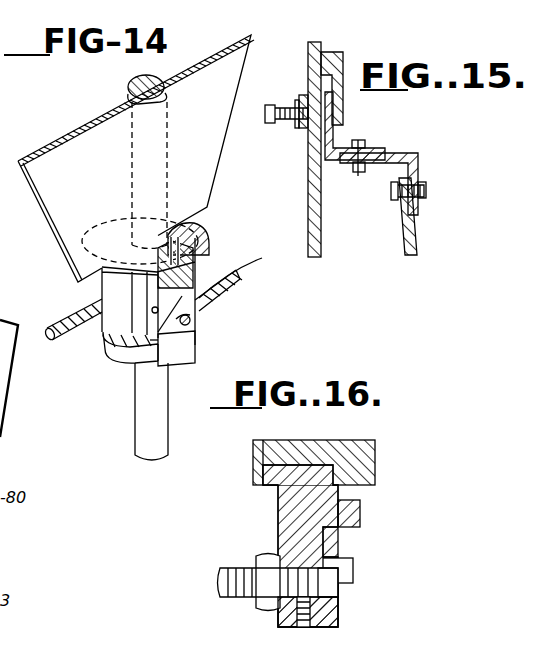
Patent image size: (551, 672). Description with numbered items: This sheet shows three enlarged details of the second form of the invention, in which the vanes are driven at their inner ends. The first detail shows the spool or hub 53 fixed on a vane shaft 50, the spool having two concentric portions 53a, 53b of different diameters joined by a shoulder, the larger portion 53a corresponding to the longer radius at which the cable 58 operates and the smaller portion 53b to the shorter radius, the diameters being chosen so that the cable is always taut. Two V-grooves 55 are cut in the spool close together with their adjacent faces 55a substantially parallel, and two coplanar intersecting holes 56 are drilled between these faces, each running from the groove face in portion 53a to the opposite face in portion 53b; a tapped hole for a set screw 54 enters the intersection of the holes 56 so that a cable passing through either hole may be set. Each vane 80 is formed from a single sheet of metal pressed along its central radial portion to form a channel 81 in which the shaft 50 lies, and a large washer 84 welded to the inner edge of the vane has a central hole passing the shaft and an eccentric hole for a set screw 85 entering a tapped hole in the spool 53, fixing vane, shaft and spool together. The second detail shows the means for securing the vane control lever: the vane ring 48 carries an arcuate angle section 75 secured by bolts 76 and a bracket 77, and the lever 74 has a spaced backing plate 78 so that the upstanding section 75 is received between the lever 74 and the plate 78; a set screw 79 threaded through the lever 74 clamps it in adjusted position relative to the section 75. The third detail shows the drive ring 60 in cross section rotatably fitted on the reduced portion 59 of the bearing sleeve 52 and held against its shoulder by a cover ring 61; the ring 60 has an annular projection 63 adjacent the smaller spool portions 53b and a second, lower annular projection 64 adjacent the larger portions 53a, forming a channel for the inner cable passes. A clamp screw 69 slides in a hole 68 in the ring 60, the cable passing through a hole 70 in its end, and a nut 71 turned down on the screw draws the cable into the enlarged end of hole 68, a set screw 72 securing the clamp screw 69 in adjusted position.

In FIG. 14, the vane 80 is at (62, 158).
In FIG. 15, the vane 80 is at (293, 97).
In FIG. 14, the channel 81 is at (136, 97).
In FIG. 14, the large washer 84 is at (206, 240).
In FIG. 14, the set screw 85 is at (178, 245).
In FIG. 14, the intersecting holes 56 is at (152, 309).
In FIG. 14, the adjacent faces 55a is at (160, 300).
In FIG. 14, the set screw 54 is at (192, 328).
In FIG. 14, the larger diameter portion 53a is at (193, 322).
In FIG. 14, the spool 53 is at (99, 329).
In FIG. 14, the cable 58 is at (203, 290).
In FIG. 14, the V-grooves 55 is at (148, 358).
In FIG. 14, the smaller diameter portion 53b is at (180, 350).
In FIG. 14, the vane shaft 50 is at (145, 415).
In FIG. 15, the lever 74 is at (321, 247).
In FIG. 15, the backing plate 78 is at (343, 62).
In FIG. 15, the arcuate angle section 75 is at (335, 138).
In FIG. 15, the bracket 77 is at (418, 154).
In FIG. 15, the vane ring 48 is at (417, 238).
In FIG. 15, the bolts 76 is at (359, 176).
In FIG. 15, the set screw 79 is at (269, 123).
In FIG. 16, the bearing sleeve 52 is at (365, 466).
In FIG. 16, the cover ring 61 is at (253, 463).
In FIG. 16, the reduced portion 59 is at (313, 466).
In FIG. 16, the drive ring 60 is at (278, 520).
In FIG. 16, the annular projection 63 is at (360, 513).
In FIG. 16, the second annular projection 64 is at (353, 569).
In FIG. 16, the hole 70 is at (330, 587).
In FIG. 16, the clamp screw 69 is at (220, 594).
In FIG. 16, the nut 71 is at (265, 565).
In FIG. 16, the hole 68 is at (285, 620).
In FIG. 16, the set screw 72 is at (303, 627).